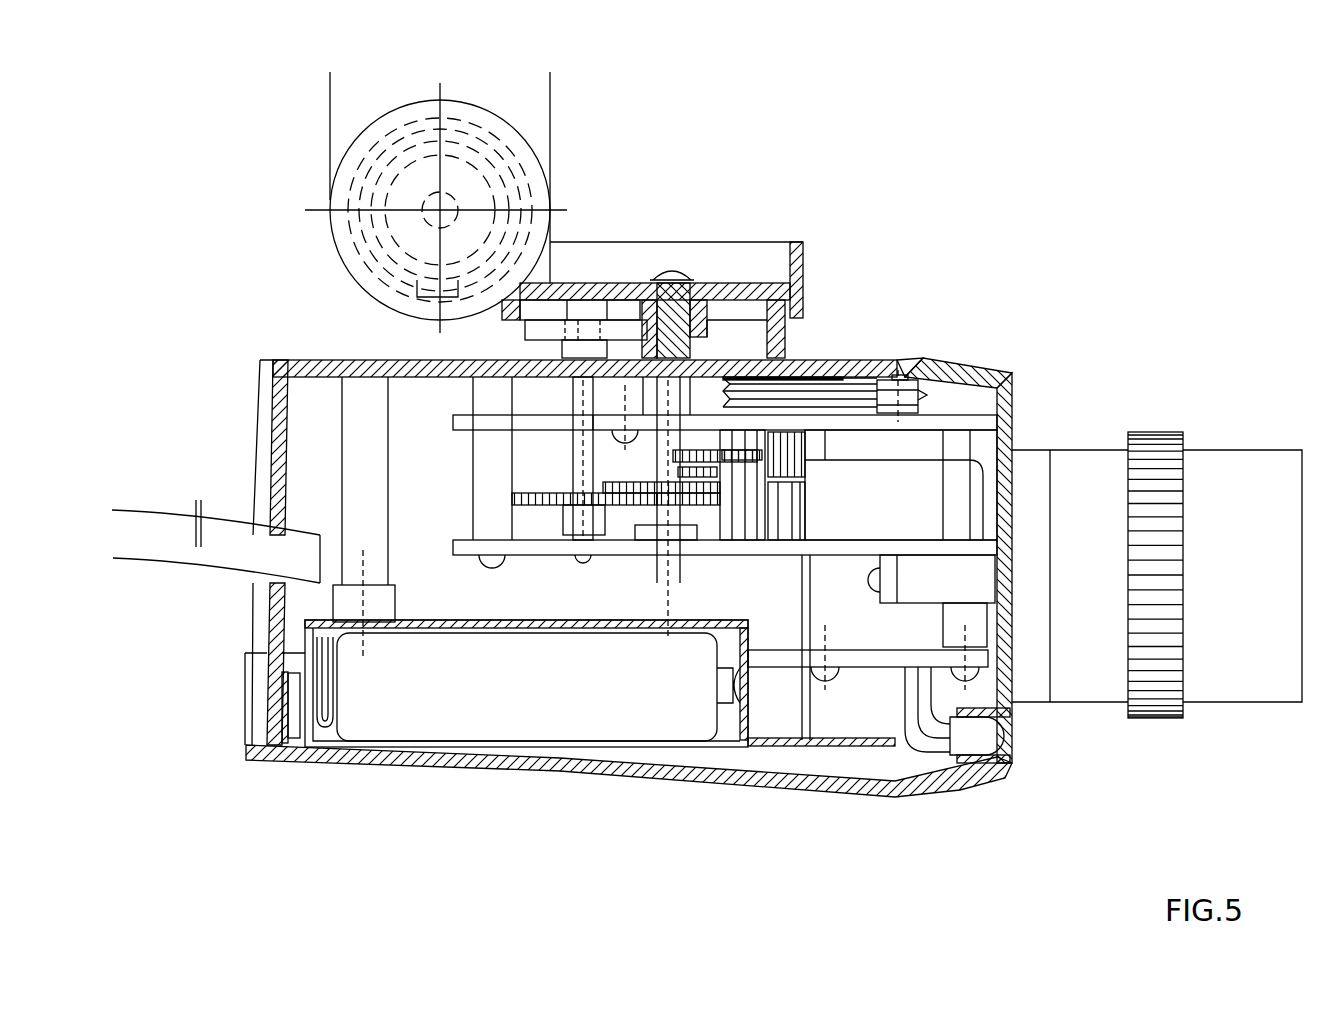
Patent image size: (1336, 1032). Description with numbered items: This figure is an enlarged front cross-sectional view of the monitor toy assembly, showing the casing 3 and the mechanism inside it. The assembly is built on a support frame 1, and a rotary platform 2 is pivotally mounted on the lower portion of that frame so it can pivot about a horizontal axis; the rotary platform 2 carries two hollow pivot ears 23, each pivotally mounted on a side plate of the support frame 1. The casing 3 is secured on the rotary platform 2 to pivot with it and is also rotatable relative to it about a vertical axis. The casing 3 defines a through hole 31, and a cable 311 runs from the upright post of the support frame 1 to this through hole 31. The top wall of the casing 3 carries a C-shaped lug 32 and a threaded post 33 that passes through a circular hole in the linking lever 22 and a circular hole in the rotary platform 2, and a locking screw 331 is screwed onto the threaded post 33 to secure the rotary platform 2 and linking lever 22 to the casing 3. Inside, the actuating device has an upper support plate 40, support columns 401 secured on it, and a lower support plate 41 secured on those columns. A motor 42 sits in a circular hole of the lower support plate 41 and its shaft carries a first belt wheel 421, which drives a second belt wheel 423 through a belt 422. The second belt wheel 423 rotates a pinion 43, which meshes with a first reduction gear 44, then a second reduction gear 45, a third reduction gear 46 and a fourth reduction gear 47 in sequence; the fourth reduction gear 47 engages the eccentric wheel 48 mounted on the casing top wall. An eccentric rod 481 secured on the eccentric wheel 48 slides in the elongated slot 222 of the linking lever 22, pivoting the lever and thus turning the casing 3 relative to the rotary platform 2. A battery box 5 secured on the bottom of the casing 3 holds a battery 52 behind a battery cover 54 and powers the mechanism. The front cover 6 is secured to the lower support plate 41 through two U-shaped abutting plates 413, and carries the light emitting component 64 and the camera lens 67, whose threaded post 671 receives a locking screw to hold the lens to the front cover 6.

The support frame 1 is at (565, 95).
The rotary platform 2 is at (742, 253).
The linking lever 22 is at (707, 310).
The elongated slot 222 is at (550, 307).
The pivot ears 23 is at (340, 193).
The casing 3 is at (302, 367).
The through hole 31 is at (268, 585).
The cable 311 is at (200, 547).
The C-shaped lug 32 is at (783, 347).
The threaded post 33 is at (697, 350).
The locking screw 331 is at (673, 273).
The upper support plate 40 is at (453, 422).
The support columns 401 is at (488, 500).
The lower support plate 41 is at (608, 548).
The U-shaped abutting plates 413 is at (895, 590).
The motor 42 is at (878, 637).
The first belt wheel 421 is at (930, 358).
The belt 422 is at (867, 388).
The second belt wheel 423 is at (853, 378).
The pinion 43 is at (800, 458).
The first reduction gear 44 is at (760, 455).
The second reduction gear 45 is at (700, 470).
The third reduction gear 46 is at (695, 492).
The fourth reduction gear 47 is at (538, 502).
The eccentric wheel 48 is at (530, 332).
The eccentric rod 481 is at (628, 307).
The battery box 5 is at (807, 746).
The battery 52 is at (470, 718).
The battery cover 54 is at (722, 785).
The front cover 6 is at (967, 780).
The light emitting component 64 is at (997, 738).
The camera lens 67 is at (1277, 687).
The threaded post 671 is at (972, 573).